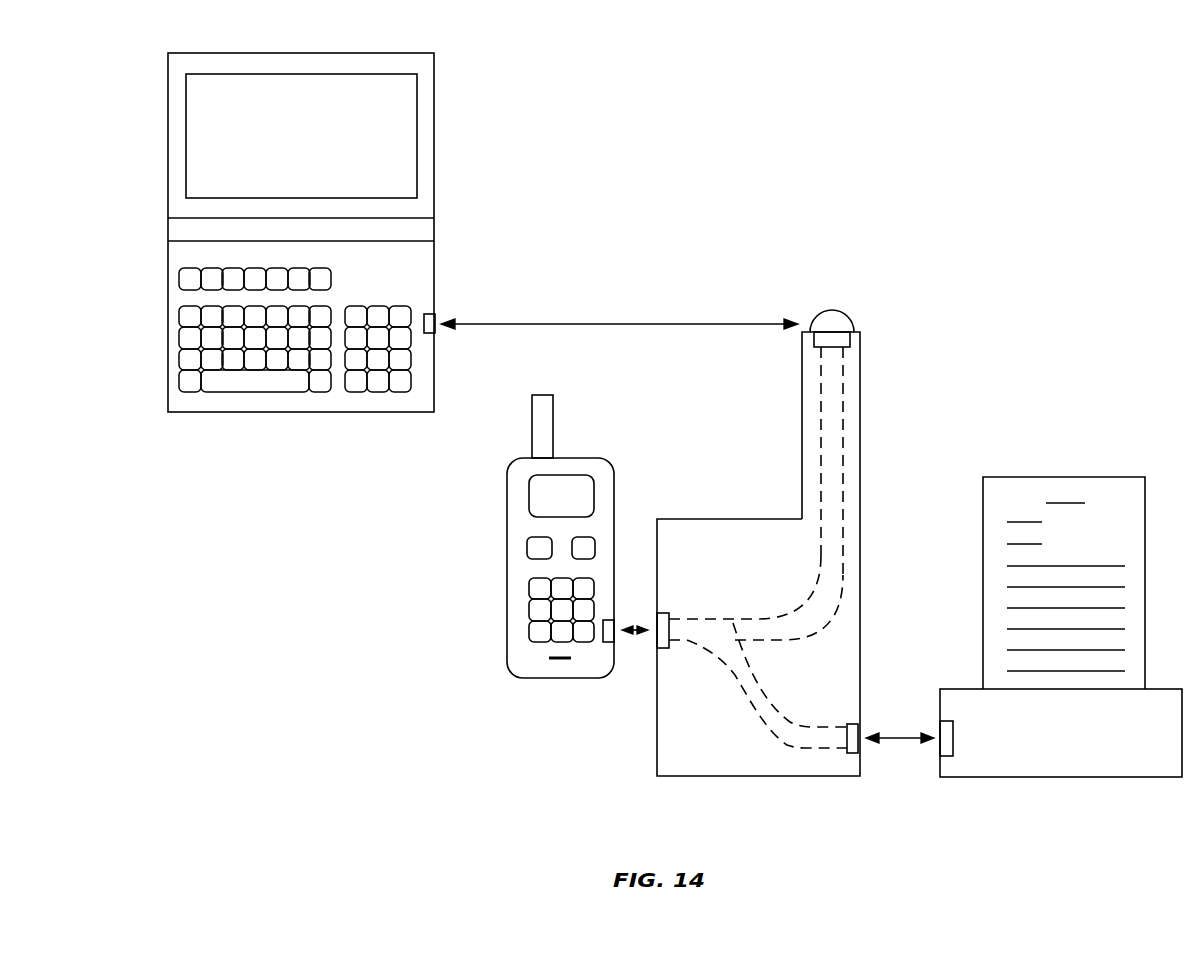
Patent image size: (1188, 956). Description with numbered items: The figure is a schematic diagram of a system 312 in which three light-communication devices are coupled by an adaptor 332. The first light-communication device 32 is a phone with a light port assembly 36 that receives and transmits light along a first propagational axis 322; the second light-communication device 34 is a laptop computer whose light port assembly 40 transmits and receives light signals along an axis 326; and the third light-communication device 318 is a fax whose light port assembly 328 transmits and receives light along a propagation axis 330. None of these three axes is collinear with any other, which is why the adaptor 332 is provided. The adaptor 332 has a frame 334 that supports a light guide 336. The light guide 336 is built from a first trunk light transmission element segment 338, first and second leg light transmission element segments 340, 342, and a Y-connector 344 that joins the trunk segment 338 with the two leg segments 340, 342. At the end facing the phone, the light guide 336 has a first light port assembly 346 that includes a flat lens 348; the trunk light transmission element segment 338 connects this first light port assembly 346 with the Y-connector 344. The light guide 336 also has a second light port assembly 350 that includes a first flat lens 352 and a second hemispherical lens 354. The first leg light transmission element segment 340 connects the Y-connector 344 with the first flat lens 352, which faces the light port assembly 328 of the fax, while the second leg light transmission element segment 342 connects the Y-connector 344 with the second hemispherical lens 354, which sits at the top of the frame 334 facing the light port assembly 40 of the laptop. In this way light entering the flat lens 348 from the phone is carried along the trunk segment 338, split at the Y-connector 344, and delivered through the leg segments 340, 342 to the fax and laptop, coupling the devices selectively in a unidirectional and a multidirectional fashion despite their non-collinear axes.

The system 312 is at (660, 102).
The second light-communication device 34 is at (427, 255).
The light port assembly 40 is at (433, 327).
The axis 326 is at (651, 312).
The first light-communication device 32 is at (574, 464).
The light port assembly 36 is at (604, 643).
The first propagational axis 322 is at (633, 636).
The adaptor 332 is at (948, 273).
The frame 334 is at (802, 388).
The second hemispherical lens 354 is at (840, 314).
The second light port assembly 350 is at (853, 340).
The light guide 336 is at (805, 447).
The flat lens 348 is at (656, 621).
The first light port assembly 346 is at (666, 612).
The second leg light transmission element segment 342 is at (818, 598).
The Y-connector 344 is at (727, 625).
The first leg light transmission element segment 340 is at (797, 737).
The first trunk light transmission element segment 338 is at (687, 647).
The first flat lens 352 is at (861, 730).
The propagation axis 330 is at (893, 740).
The light port assembly 328 is at (953, 745).
The third light-communication device 318 is at (1060, 758).